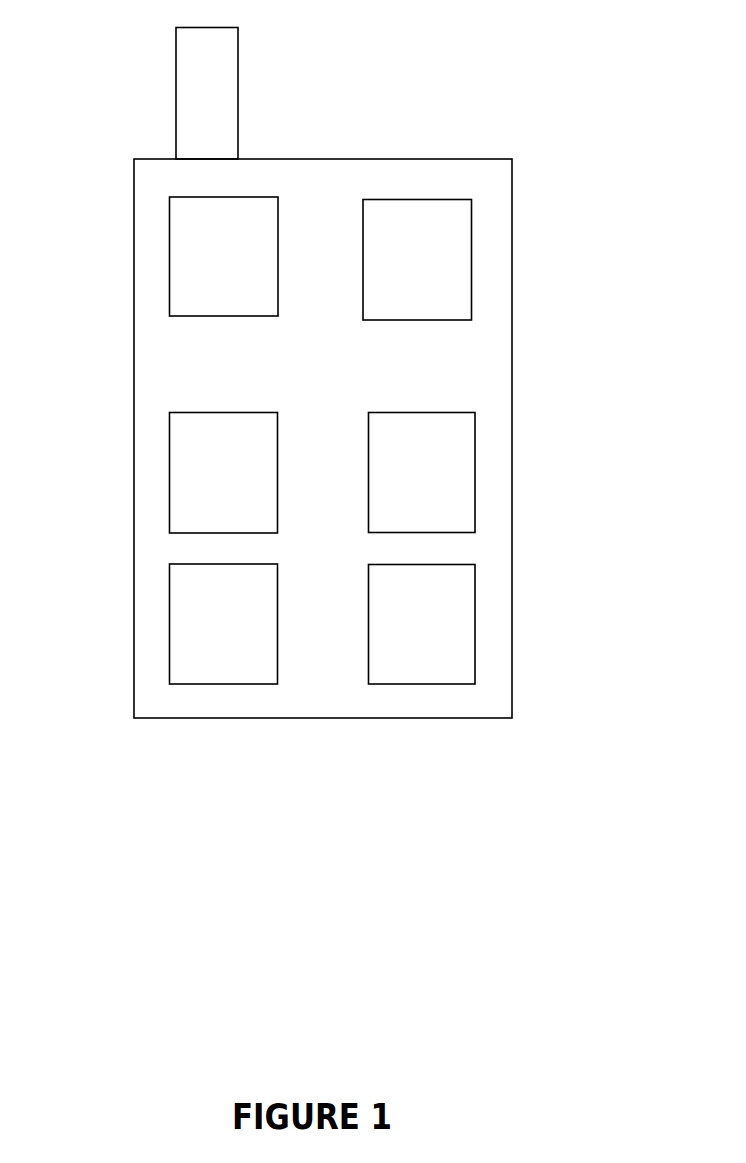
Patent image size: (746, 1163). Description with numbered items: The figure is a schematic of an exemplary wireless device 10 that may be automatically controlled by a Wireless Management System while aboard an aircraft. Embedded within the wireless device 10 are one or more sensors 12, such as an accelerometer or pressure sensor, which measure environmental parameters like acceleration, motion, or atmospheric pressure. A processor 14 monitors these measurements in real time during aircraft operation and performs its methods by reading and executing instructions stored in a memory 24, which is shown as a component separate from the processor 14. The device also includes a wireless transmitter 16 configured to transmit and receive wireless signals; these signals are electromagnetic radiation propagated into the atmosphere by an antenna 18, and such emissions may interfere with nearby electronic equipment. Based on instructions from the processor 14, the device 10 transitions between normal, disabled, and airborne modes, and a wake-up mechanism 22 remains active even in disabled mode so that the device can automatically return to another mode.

The wireless device 10 is at (512, 267).
The sensors 12 is at (204, 630).
The processor 14 is at (442, 630).
The wireless transmitter 16 is at (217, 242).
The antenna 18 is at (218, 77).
The wake-up mechanism 22 is at (429, 217).
The memory 24 is at (442, 474).